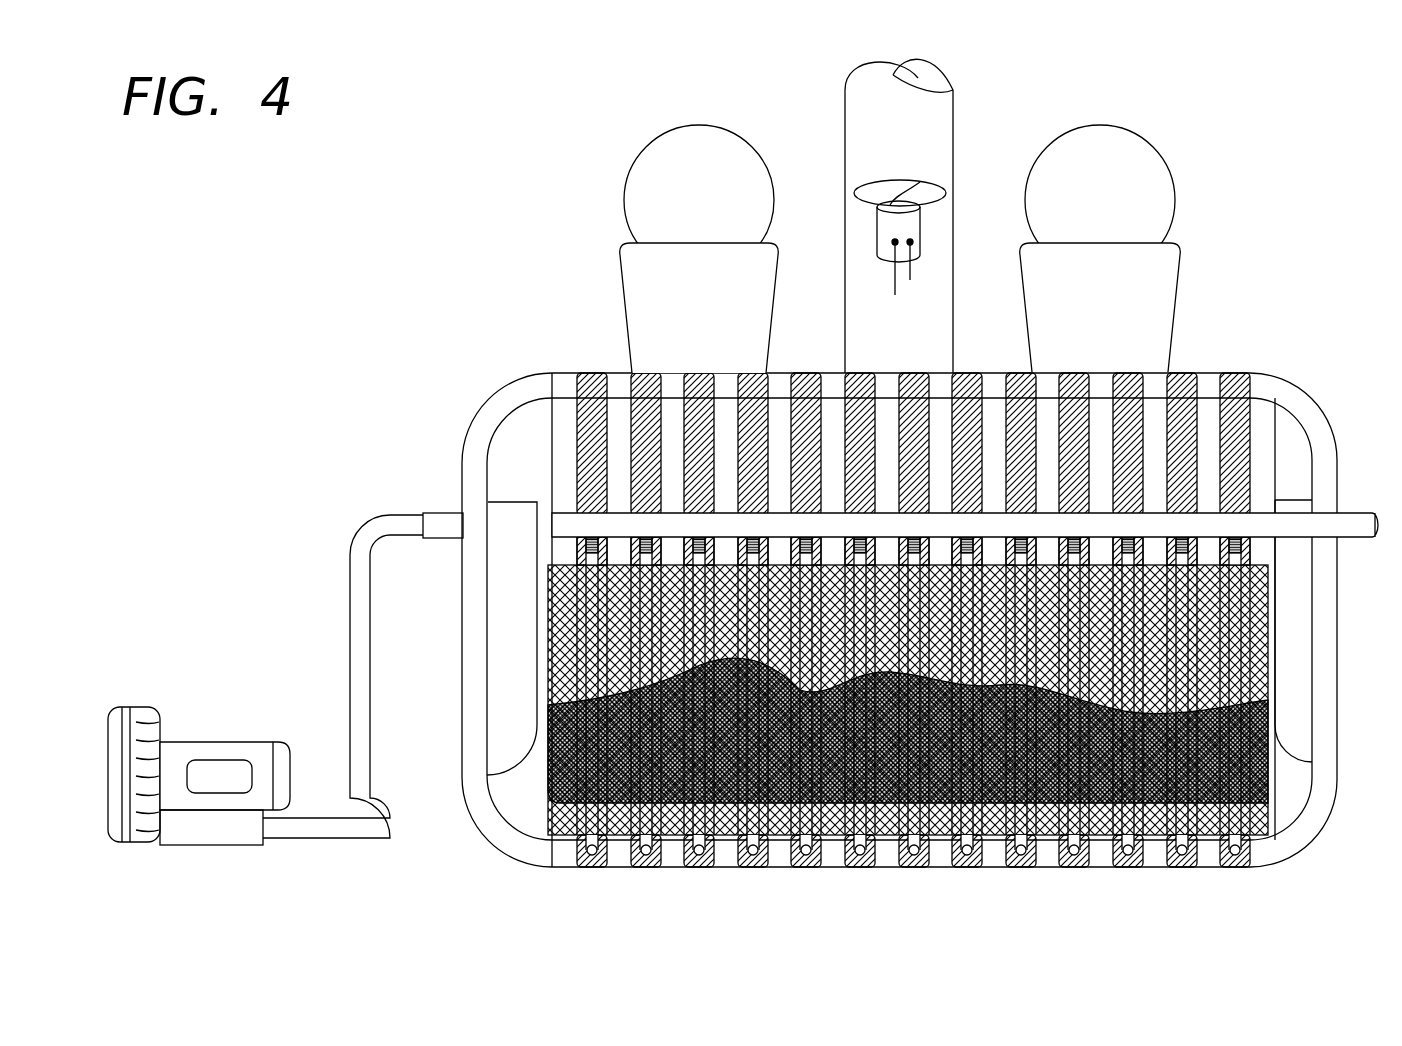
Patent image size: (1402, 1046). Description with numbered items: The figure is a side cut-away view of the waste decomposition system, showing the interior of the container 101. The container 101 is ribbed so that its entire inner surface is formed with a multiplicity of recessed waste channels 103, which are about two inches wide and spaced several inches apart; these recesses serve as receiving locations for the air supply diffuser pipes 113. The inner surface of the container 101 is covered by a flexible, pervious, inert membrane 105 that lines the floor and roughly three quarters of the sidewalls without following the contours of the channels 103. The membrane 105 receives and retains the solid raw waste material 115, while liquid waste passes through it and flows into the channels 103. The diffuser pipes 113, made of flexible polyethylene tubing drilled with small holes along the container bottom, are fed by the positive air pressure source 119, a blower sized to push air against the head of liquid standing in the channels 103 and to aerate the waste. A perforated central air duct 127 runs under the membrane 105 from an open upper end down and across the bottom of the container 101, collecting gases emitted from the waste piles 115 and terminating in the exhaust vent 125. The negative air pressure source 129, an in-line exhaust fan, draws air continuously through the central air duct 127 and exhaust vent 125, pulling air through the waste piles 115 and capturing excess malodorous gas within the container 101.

The container 101 is at (1308, 392).
The waste channels 103 is at (968, 866).
The porous membrane 105 is at (568, 843).
The air supply diffuser pipes 113 is at (698, 868).
The solid raw waste material 115 is at (1250, 703).
The positive air pressure source 119 is at (185, 742).
The exhaust vent 125 is at (944, 216).
The central air duct 127 is at (512, 500).
The negative air pressure source 129 is at (922, 240).